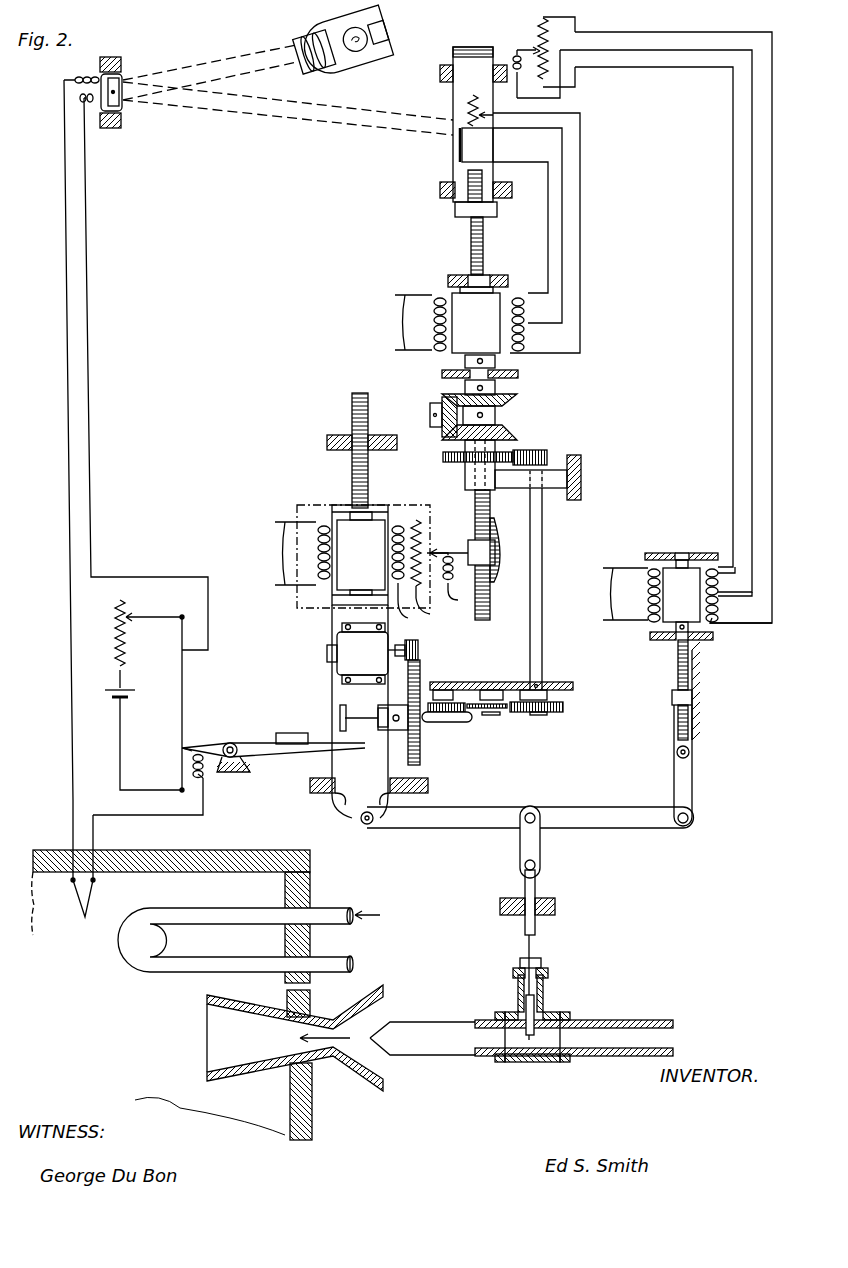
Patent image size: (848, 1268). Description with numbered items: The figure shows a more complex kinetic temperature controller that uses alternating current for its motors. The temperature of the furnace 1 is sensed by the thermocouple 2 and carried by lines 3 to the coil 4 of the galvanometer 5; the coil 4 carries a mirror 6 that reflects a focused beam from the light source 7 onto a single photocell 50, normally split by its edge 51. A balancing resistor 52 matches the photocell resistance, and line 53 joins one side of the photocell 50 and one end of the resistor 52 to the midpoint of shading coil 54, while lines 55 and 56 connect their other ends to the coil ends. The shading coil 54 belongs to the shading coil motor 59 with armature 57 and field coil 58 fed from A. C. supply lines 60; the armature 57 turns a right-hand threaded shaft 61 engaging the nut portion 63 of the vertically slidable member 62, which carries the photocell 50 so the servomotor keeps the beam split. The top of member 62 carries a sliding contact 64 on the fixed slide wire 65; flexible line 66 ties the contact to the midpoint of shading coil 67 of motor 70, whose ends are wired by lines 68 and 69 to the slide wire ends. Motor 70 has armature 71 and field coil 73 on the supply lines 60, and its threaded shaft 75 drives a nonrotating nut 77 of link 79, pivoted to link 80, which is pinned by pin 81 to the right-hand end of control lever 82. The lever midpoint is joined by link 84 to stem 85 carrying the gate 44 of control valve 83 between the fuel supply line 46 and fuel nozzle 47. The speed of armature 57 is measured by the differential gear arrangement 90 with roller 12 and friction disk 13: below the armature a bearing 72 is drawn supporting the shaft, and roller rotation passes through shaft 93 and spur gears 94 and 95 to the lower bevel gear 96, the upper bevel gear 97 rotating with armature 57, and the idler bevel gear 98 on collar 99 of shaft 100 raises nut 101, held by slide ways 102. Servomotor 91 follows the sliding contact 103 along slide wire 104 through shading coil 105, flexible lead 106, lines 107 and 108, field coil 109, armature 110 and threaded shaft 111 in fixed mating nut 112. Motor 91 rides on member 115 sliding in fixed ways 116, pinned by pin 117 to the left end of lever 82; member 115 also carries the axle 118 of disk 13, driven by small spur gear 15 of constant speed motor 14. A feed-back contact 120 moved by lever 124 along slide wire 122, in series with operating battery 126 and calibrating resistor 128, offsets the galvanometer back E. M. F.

The furnace 1 is at (310, 876).
The thermocouple 2 is at (95, 904).
The lines 3 is at (85, 808).
The coil 4 is at (80, 79).
The galvanometer 5 is at (148, 62).
The mirror 6 is at (122, 106).
The light source 7 is at (357, 71).
The roller 12 is at (465, 722).
The friction disk 13 is at (421, 752).
The constant speed motor 14 is at (325, 639).
The small spur gear 15 is at (419, 650).
The gate 44 is at (530, 1062).
The fuel supply line 46 is at (648, 1020).
The fuel nozzle 47 is at (419, 1024).
The photocell 50 is at (459, 150).
The edge 51 is at (458, 128).
The balancing resistor 52 is at (467, 105).
The line 53 is at (518, 128).
The shading coil 54 is at (520, 298).
The line 55 is at (548, 240).
The line 56 is at (580, 252).
The armature 57 is at (476, 323).
The field coil 58 is at (428, 324).
The shading coil motor 59 is at (442, 285).
The A. C. supply lines 60 is at (453, 457).
The shaft 61 is at (471, 238).
The member 62 is at (453, 57).
The nut portion 63 is at (455, 210).
The sliding contact 64 is at (532, 64).
The slide wire 65 is at (541, 22).
The flexible line 66 is at (514, 86).
The shading coil 67 is at (718, 618).
The line 68 is at (575, 80).
The line 69 is at (576, 35).
The motor 70 is at (665, 546).
The armature 71 is at (688, 572).
The bearing 72 is at (458, 378).
The field coil 73 is at (650, 612).
The shaft 75 is at (678, 659).
The nonrotating nut 77 is at (672, 698).
The link 79 is at (676, 727).
The link 80 is at (674, 777).
The pin 81 is at (694, 817).
The control lever 82 is at (638, 820).
The control valve 83 is at (554, 1060).
The link 84 is at (520, 850).
The stem 85 is at (536, 933).
The differential gear arrangement 90 is at (492, 410).
The servomotor 91 is at (330, 500).
The shaft 93 is at (542, 623).
The spur gear 94 is at (546, 456).
The spur gear 95 is at (445, 462).
The lower bevel gear 96 is at (517, 437).
The upper bevel gear 97 is at (516, 399).
The idler bevel gear 98 is at (441, 402).
The collar 99 is at (495, 416).
The shaft 100 is at (475, 500).
The nut 101 is at (476, 543).
The slide ways 102 is at (499, 580).
The sliding contact 103 is at (469, 553).
The slide wire 104 is at (418, 520).
The shading coil 105 is at (413, 610).
The flexible lead 106 is at (453, 582).
The line 107 is at (441, 611).
The line 108 is at (400, 526).
The field coil 109 is at (320, 568).
The armature 110 is at (361, 555).
The threaded shaft 111 is at (352, 466).
The fixed mating nut 112 is at (341, 436).
The member 115 is at (332, 690).
The fixed ways 116 is at (402, 794).
The pin 117 is at (369, 826).
The axle 118 is at (360, 716).
The contact 120 is at (185, 748).
The slide wire 122 is at (183, 711).
The lever 124 is at (268, 744).
The operating battery 126 is at (124, 698).
The adjusting calibrating resistor 128 is at (123, 640).